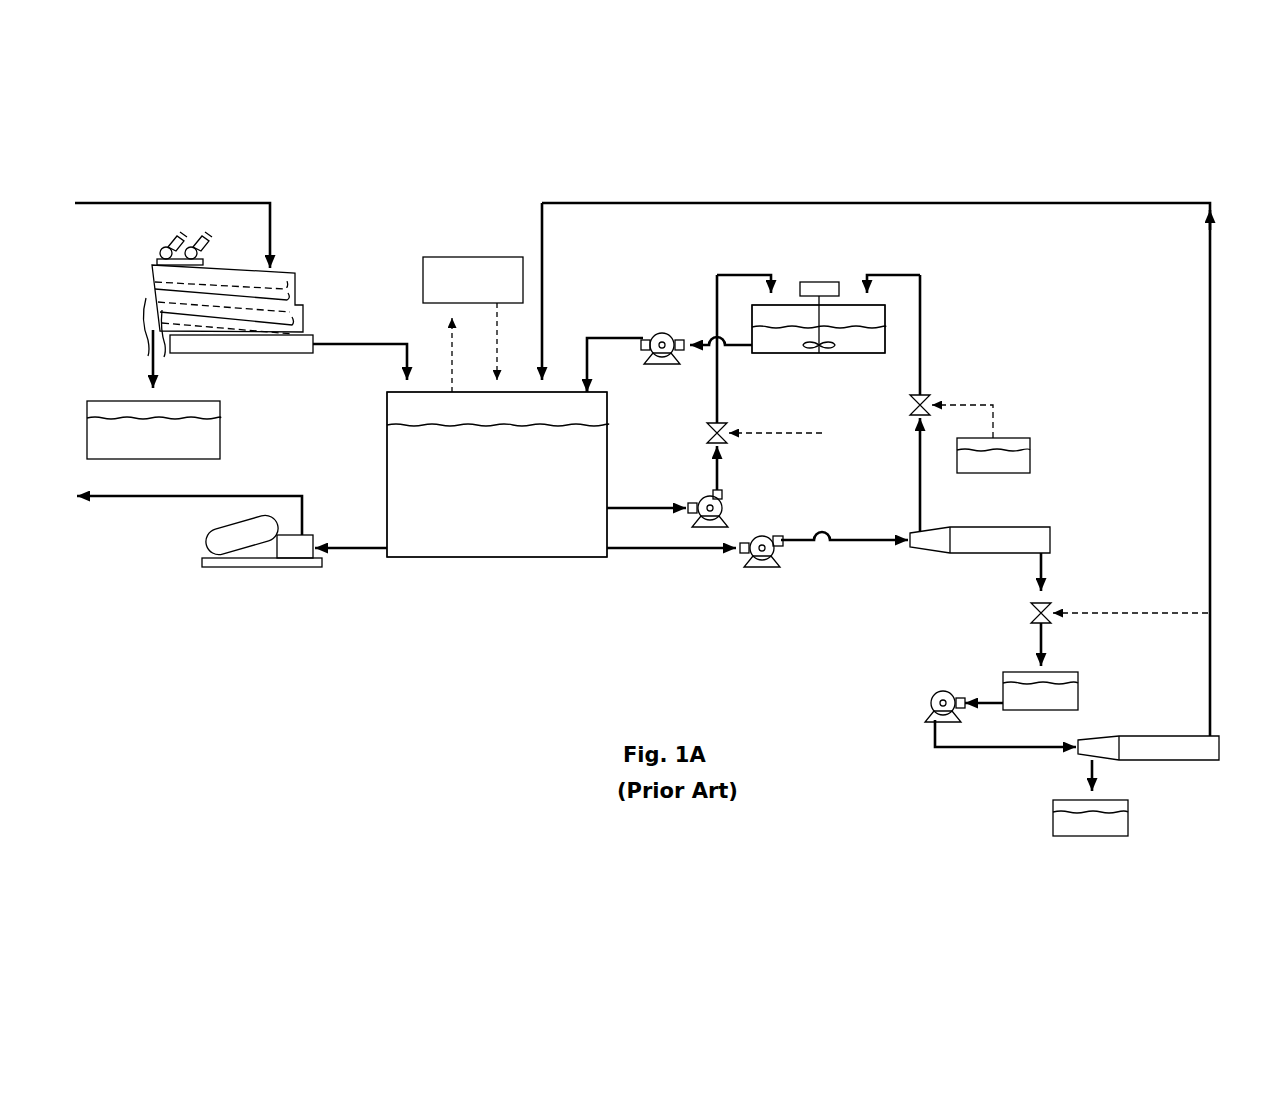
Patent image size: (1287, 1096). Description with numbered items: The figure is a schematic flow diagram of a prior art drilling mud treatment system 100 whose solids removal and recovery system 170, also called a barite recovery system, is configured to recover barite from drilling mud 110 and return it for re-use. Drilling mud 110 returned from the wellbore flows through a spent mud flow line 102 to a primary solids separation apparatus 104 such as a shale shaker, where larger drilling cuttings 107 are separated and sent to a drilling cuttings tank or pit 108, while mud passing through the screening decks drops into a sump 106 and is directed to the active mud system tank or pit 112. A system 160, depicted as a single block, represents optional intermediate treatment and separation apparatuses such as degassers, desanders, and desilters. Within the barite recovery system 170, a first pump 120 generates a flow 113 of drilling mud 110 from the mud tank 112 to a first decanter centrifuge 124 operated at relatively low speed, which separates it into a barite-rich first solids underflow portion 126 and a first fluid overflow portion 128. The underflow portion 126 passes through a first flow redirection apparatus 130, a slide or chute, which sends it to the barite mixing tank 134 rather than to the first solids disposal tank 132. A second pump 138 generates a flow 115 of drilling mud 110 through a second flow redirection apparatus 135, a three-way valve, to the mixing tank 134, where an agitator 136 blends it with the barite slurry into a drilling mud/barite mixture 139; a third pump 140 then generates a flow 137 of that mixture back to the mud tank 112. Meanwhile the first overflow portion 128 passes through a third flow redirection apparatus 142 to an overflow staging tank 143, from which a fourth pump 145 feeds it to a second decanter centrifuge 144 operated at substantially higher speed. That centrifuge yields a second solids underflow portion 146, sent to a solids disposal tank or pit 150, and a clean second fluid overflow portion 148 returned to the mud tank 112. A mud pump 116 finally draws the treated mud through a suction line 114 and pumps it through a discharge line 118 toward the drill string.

The drilling mud treatment system 100 is at (340, 98).
The spent mud flow line 102 is at (158, 203).
The primary solids separation apparatus 104 is at (297, 272).
The sump 106 is at (246, 355).
The drilling cuttings 107 is at (150, 382).
The drilling cuttings tank or pit 108 is at (222, 438).
The drilling mud 110 is at (498, 474).
The active mud system tank or pit 112 is at (462, 560).
The flow of drilling mud 113 is at (640, 553).
The suction line 114 is at (356, 552).
The flow of drilling mud 115 is at (738, 275).
The mud pump 116 is at (260, 568).
The discharge line 118 is at (127, 498).
The first pump 120 is at (763, 562).
The first decanter centrifuge 124 is at (1040, 527).
The first solids underflow portion 126 is at (896, 275).
The first fluid overflow portion 128 is at (1045, 575).
The first flow redirection apparatus 130 is at (925, 395).
The first solids disposal tank 132 is at (1032, 455).
The barite mixing tank 134 is at (822, 355).
The second flow redirection apparatus 135 is at (708, 433).
The agitator 136 is at (819, 282).
The flow of blended drilling mud/recovered barite mixture 137 is at (587, 358).
The second pump 138 is at (725, 511).
The blended drilling mud/barite mixture 139 is at (868, 355).
The third pump 140 is at (658, 332).
The third flow redirection apparatus 142 is at (1030, 613).
The overflow staging tank 143 is at (1078, 690).
The second decanter centrifuge 144 is at (1172, 760).
The fourth pump 145 is at (932, 695).
The second solids underflow portion 146 is at (1090, 775).
The second fluid overflow portion 148 is at (530, 221).
The second solids disposal tank or pit 150 is at (1085, 838).
The intermediate mud treatment and/or solids separation system 160 is at (473, 324).
The solids removal and recovery system 170 is at (967, 168).